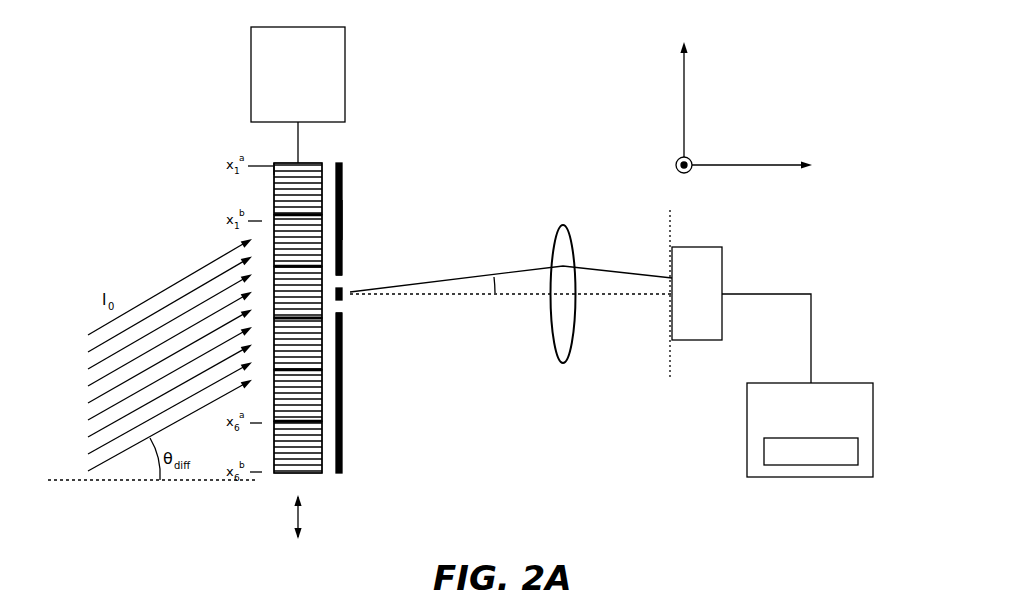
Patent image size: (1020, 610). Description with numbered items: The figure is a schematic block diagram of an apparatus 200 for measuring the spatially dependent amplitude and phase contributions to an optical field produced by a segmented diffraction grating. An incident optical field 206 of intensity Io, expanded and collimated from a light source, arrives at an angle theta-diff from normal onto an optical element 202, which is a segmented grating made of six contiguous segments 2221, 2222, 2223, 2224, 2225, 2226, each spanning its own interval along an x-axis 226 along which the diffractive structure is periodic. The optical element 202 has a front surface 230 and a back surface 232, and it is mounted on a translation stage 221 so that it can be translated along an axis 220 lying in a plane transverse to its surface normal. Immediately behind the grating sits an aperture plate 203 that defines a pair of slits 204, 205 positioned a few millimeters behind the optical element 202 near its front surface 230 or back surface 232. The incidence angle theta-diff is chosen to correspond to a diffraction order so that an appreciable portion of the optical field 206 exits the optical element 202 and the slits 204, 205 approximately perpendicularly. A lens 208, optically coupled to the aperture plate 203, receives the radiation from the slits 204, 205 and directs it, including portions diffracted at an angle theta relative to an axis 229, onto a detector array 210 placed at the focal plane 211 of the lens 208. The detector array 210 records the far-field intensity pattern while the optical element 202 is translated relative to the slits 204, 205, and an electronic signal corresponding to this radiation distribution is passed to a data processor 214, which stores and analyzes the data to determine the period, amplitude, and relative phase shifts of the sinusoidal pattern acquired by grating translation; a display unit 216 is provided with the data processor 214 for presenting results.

The apparatus 200 is at (537, 118).
The optical element 202 is at (252, 189).
The aperture plate 203 is at (342, 220).
The aperture 204 is at (340, 278).
The aperture 205 is at (343, 313).
The optical field 206 is at (157, 259).
The lens 208 is at (563, 226).
The detector array 210 is at (722, 262).
The focal plane 211 is at (670, 372).
The data processor 214 is at (836, 383).
The display unit 216 is at (764, 457).
The axis 220 is at (302, 518).
The translation stage 221 is at (345, 48).
The first segment 2221 is at (322, 192).
The second segment 2222 is at (322, 248).
The third segment 2223 is at (322, 302).
The fourth segment 2224 is at (322, 355).
The fifth segment 2225 is at (322, 410).
The sixth segment 2226 is at (322, 457).
The x-axis 226 is at (685, 100).
The axis 229 is at (617, 298).
The front surface 230 is at (271, 160).
The back surface 232 is at (331, 160).